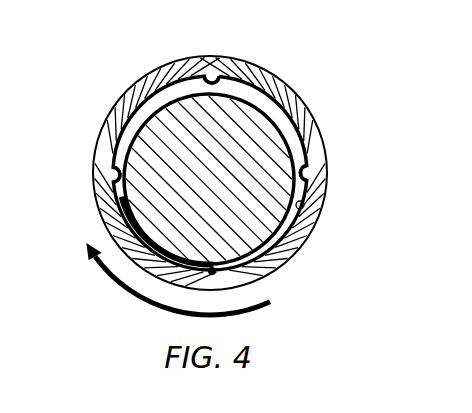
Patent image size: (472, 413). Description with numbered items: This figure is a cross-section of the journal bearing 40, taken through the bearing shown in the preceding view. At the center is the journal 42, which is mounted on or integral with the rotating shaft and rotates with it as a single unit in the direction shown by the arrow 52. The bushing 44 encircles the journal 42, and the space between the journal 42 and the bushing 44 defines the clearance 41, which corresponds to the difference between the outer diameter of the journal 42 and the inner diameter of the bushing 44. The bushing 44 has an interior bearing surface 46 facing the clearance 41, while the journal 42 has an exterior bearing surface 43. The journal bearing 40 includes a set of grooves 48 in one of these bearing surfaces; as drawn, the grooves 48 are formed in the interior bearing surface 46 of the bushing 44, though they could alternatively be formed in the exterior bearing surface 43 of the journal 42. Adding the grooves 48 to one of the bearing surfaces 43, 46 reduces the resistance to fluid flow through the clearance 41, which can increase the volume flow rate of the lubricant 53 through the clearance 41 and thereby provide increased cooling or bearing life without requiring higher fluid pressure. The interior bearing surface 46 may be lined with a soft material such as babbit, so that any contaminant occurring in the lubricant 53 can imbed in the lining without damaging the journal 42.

The journal bearing 40 is at (78, 97).
The clearance 41 is at (160, 100).
The journal 42 is at (198, 191).
The exterior bearing surface 43 is at (277, 118).
The bushing 44 is at (262, 65).
The interior bearing surface 46 is at (304, 205).
The grooves 48 is at (212, 76).
The arrow 52 is at (136, 296).
The lubricant 53 is at (118, 194).